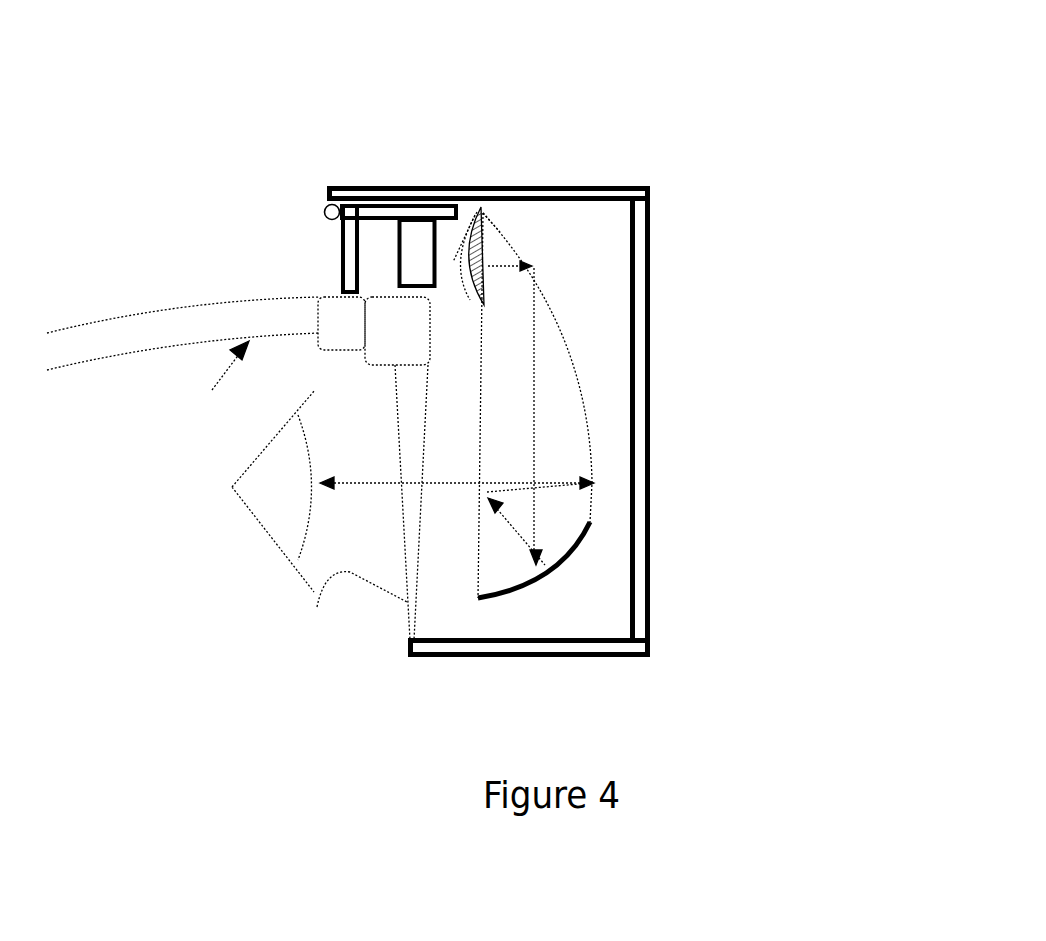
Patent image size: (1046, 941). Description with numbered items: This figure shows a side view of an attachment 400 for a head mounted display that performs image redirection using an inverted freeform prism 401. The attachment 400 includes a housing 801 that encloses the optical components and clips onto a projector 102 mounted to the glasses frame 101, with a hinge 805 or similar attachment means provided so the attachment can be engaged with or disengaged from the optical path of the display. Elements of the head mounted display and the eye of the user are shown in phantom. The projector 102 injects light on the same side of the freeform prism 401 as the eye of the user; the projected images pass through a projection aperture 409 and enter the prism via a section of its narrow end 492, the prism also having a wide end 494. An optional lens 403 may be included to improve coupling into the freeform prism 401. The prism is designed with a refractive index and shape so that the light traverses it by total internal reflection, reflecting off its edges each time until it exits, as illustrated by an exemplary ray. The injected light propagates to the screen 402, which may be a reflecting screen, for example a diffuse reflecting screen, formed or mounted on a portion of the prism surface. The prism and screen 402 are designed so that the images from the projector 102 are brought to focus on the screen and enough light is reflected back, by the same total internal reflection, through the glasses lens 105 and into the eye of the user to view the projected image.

The glasses frame 101 is at (320, 444).
The projector 102 is at (380, 274).
The glasses lens 105 is at (345, 514).
The attachment 400 is at (595, 469).
The freeform prism 401 is at (604, 301).
The screen 402 is at (588, 528).
The lens 403 is at (484, 195).
The projection aperture 409 is at (458, 258).
The narrow end 492 is at (497, 224).
The wide end 494 is at (480, 567).
The housing 801 is at (655, 608).
The hinge 805 is at (328, 207).